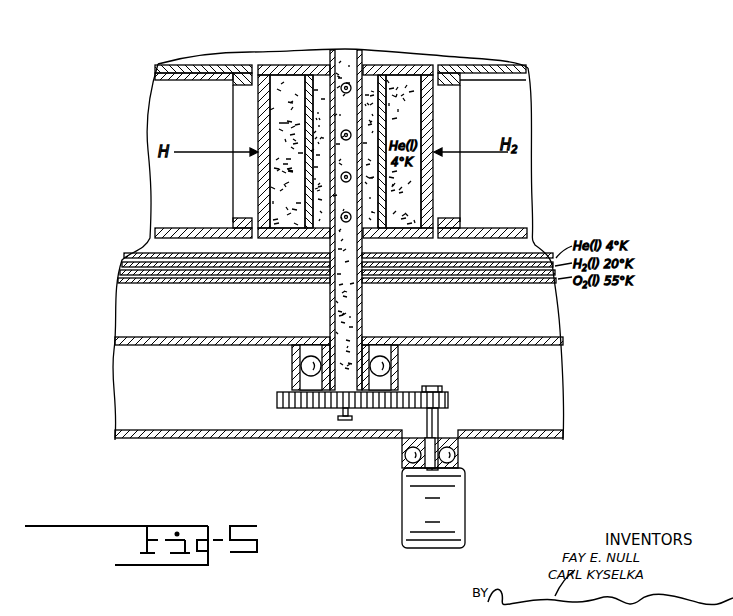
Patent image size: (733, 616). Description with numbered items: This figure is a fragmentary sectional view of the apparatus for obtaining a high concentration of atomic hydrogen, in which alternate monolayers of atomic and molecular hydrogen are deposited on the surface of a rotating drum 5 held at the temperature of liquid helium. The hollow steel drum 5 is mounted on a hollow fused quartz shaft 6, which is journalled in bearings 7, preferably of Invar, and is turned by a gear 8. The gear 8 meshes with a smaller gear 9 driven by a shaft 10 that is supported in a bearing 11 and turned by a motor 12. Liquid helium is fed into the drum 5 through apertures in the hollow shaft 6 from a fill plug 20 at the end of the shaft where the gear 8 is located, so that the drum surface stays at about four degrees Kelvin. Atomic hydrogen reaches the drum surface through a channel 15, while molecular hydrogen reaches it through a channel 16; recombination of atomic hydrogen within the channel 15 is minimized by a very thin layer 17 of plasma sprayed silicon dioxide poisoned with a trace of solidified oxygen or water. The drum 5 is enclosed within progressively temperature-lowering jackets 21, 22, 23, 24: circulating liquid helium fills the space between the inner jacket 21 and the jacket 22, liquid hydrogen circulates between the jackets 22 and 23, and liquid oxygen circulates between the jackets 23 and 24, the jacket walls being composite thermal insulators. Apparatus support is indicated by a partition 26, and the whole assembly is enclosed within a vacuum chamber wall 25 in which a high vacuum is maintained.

The rotating drum 5 is at (284, 72).
The hollow shaft 6 is at (362, 300).
The bearings 7 is at (400, 366).
The gear 8 is at (277, 401).
The smaller gear 9 is at (449, 394).
The shaft 10 is at (440, 420).
The bearing 11 is at (460, 458).
The motor 12 is at (468, 520).
The channel 15 is at (158, 68).
The channel 16 is at (526, 68).
The layer of plasma sprayed silicon dioxide 17 is at (160, 77).
The fill plug 20 is at (337, 418).
The inner jacket 21 is at (386, 256).
The jacket 22 is at (430, 262).
The jacket 23 is at (450, 275).
The jacket 24 is at (500, 283).
The vacuum chamber wall 25 is at (518, 440).
The partition 26 is at (510, 341).